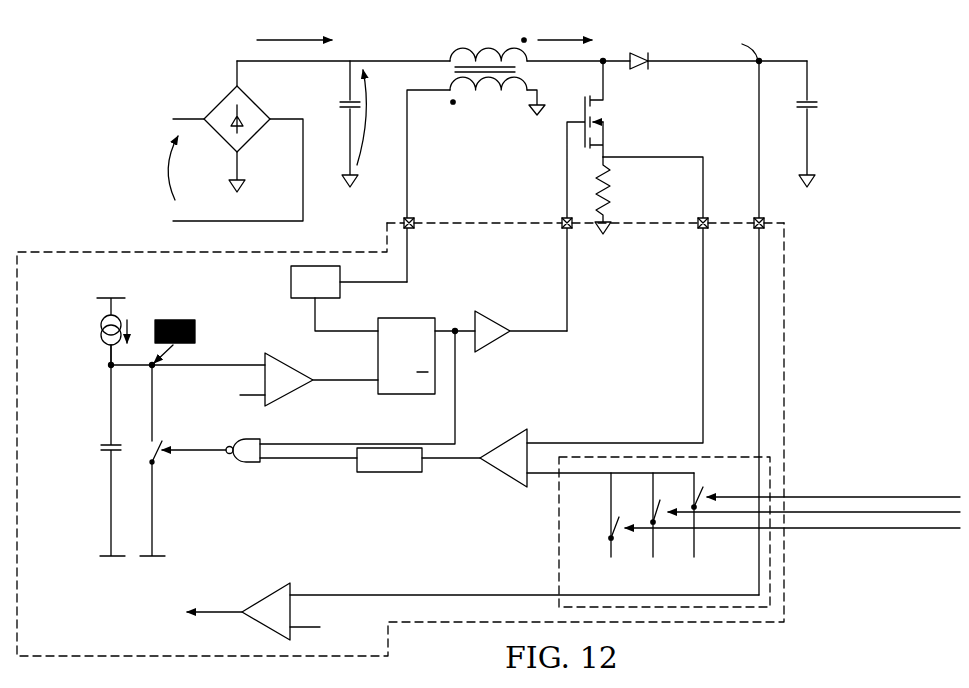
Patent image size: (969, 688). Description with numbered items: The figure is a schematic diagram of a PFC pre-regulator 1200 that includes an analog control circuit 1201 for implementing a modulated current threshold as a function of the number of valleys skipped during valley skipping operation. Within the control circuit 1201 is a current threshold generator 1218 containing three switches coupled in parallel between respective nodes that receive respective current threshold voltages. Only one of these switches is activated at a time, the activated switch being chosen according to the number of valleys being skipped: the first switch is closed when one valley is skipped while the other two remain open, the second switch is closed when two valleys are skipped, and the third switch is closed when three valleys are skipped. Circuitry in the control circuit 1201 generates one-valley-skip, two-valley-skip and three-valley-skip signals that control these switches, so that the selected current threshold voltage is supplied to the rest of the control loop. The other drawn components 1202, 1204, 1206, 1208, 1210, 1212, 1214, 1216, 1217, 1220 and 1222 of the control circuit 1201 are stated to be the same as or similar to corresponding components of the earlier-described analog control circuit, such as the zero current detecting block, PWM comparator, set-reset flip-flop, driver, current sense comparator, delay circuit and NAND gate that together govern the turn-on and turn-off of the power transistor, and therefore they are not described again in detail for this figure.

The PFC pre-regulator 1200 is at (178, 52).
The analog control circuit 1201 is at (115, 252).
The bridge rectifier 1202 is at (208, 113).
The zero current detection block 1204 is at (291, 283).
The SR latch 1206 is at (405, 394).
The gate driver 1208 is at (485, 345).
The PWM comparator 1210 is at (287, 358).
The ramp node 1212 is at (100, 373).
The current source 1214 is at (102, 320).
The zero current comparator 1216 is at (498, 478).
The delay block 1217 is at (385, 473).
The current threshold generator 1218 is at (559, 545).
The NAND gate 1220 is at (240, 462).
The error amplifier 1222 is at (270, 593).